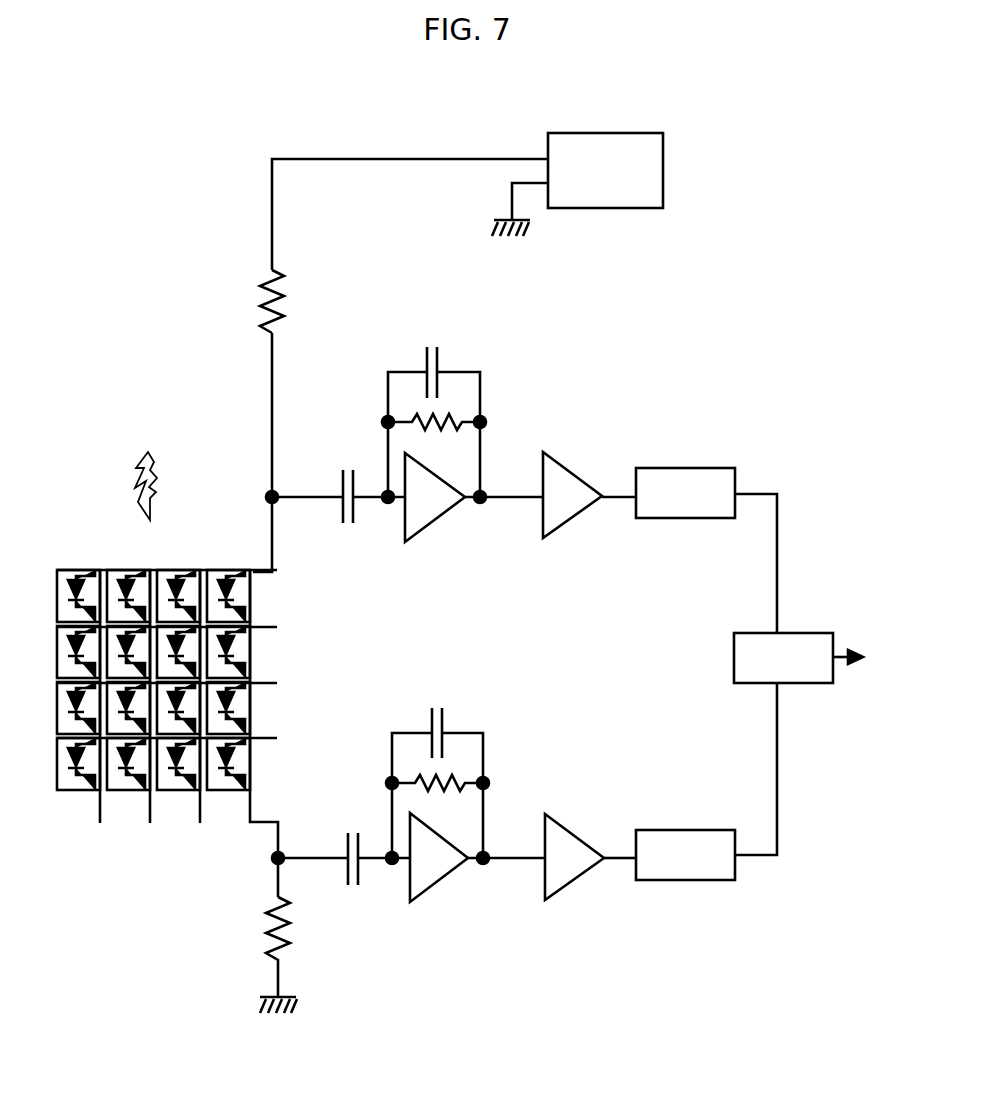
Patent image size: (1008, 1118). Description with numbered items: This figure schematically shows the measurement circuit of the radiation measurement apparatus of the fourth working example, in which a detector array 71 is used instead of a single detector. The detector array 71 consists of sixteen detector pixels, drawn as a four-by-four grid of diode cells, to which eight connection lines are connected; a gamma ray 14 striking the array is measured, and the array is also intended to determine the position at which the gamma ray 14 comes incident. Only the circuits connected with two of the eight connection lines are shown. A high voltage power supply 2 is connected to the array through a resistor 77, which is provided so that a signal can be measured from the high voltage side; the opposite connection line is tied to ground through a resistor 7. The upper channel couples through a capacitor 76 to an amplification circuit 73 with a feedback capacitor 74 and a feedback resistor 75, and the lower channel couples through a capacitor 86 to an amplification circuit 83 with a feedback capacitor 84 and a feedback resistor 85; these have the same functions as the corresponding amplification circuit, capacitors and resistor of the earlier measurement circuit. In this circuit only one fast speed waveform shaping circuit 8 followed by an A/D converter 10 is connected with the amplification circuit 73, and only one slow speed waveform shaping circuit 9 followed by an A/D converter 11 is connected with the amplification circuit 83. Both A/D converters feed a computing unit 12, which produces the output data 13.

The high voltage power supply 2 is at (663, 172).
The resistor 77 is at (285, 299).
The capacitor 76 is at (345, 468).
The amplification circuit 73 is at (440, 521).
The resistor 75 is at (450, 418).
The capacitor 74 is at (428, 345).
The fast speed waveform shaping circuit 8 is at (575, 512).
The A/D converter 10 is at (682, 468).
The computing unit 12 is at (734, 657).
The output data 13 is at (840, 660).
The A/D converter 11 is at (682, 830).
The slow speed waveform shaping circuit 9 is at (577, 874).
The capacitor 86 is at (350, 831).
The amplification circuit 83 is at (443, 883).
The resistor 85 is at (455, 780).
The capacitor 84 is at (433, 705).
The resistor 7 is at (268, 932).
The detector array 71 is at (125, 840).
The gamma ray 14 is at (148, 455).